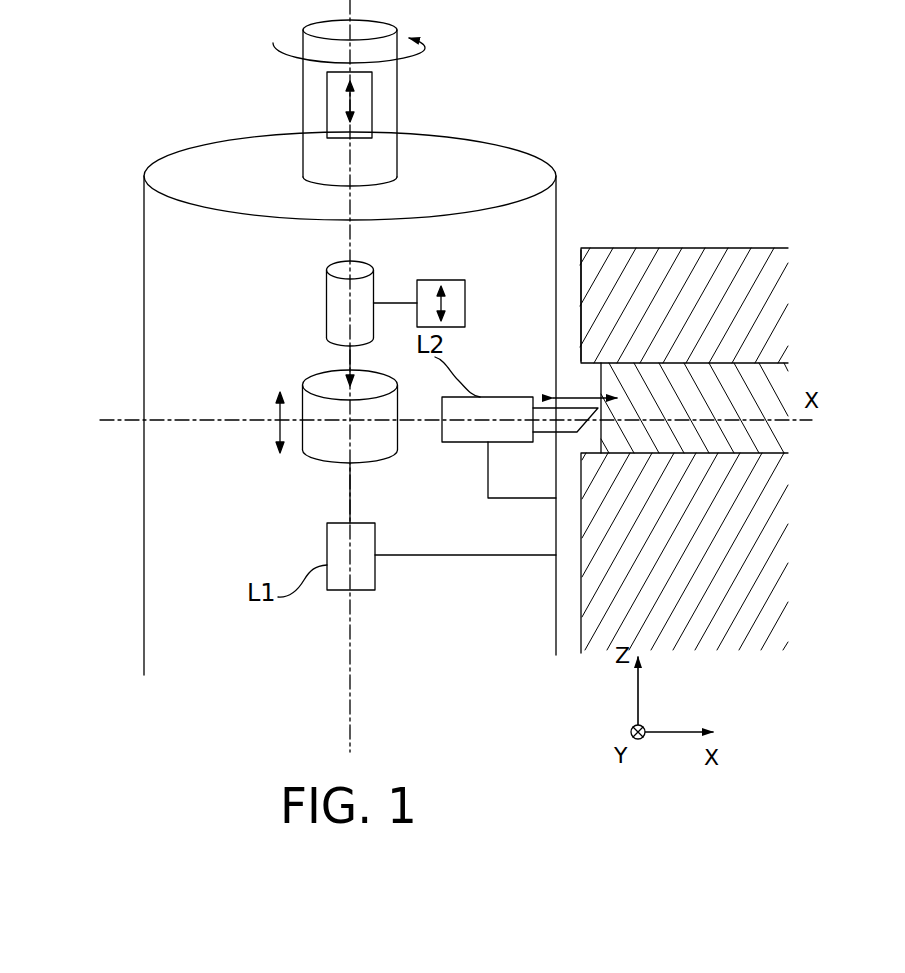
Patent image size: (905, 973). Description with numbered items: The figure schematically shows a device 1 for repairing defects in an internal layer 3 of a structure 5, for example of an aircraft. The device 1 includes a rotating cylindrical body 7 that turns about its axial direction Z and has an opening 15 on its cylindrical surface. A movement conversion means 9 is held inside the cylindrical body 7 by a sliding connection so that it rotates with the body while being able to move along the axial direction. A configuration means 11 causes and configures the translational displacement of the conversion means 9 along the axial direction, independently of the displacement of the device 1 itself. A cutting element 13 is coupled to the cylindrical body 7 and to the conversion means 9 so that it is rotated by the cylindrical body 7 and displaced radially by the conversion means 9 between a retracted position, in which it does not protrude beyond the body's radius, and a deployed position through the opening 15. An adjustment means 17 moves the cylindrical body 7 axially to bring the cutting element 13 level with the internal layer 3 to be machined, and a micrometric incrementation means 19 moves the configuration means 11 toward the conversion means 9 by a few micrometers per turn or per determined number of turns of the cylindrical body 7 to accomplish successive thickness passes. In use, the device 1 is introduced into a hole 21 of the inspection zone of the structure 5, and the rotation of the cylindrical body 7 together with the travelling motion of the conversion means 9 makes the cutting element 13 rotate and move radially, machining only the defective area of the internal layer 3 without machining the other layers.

The device for repairing defects 1 is at (314, 409).
The internal layer 3 is at (776, 380).
The structure 5 is at (708, 390).
The cylindrical body 7 is at (144, 255).
The movement conversion means 9 is at (302, 453).
The configuration means 11 is at (326, 297).
The cutting element 13 is at (555, 427).
The opening 15 is at (555, 385).
The adjustment means 17 is at (397, 110).
The micrometric incrementation means 19 is at (465, 285).
The hole 21 is at (571, 240).